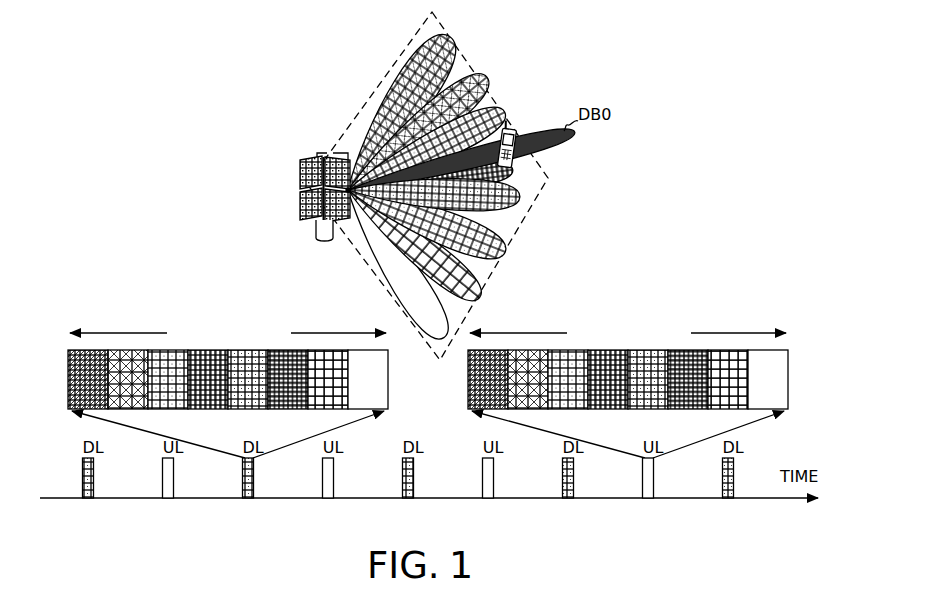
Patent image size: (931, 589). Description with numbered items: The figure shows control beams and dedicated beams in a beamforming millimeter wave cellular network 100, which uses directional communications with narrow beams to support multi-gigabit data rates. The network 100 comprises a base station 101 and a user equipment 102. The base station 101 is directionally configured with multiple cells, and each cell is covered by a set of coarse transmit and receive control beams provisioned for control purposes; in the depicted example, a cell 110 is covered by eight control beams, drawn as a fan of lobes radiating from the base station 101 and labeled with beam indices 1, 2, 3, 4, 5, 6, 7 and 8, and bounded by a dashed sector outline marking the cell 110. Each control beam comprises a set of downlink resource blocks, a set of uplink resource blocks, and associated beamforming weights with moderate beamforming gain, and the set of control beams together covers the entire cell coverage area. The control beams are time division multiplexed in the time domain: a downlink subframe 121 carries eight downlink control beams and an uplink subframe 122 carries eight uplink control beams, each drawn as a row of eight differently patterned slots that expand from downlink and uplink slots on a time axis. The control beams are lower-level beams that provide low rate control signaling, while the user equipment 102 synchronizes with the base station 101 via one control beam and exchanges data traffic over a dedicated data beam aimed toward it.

The beamforming mmWave cellular network 100 is at (137, 38).
The base station 101 is at (316, 160).
The user equipment 102 is at (506, 125).
The cell 110 is at (545, 178).
The downlink subframe 121 is at (389, 378).
The uplink subframe 122 is at (789, 378).
The beam 1 is at (399, 113).
The beam 2 is at (417, 133).
The beam 3 is at (426, 151).
The beam 4 is at (430, 179).
The beam 5 is at (433, 193).
The beam 6 is at (427, 221).
The beam 7 is at (414, 244).
The beam 8 is at (396, 264).